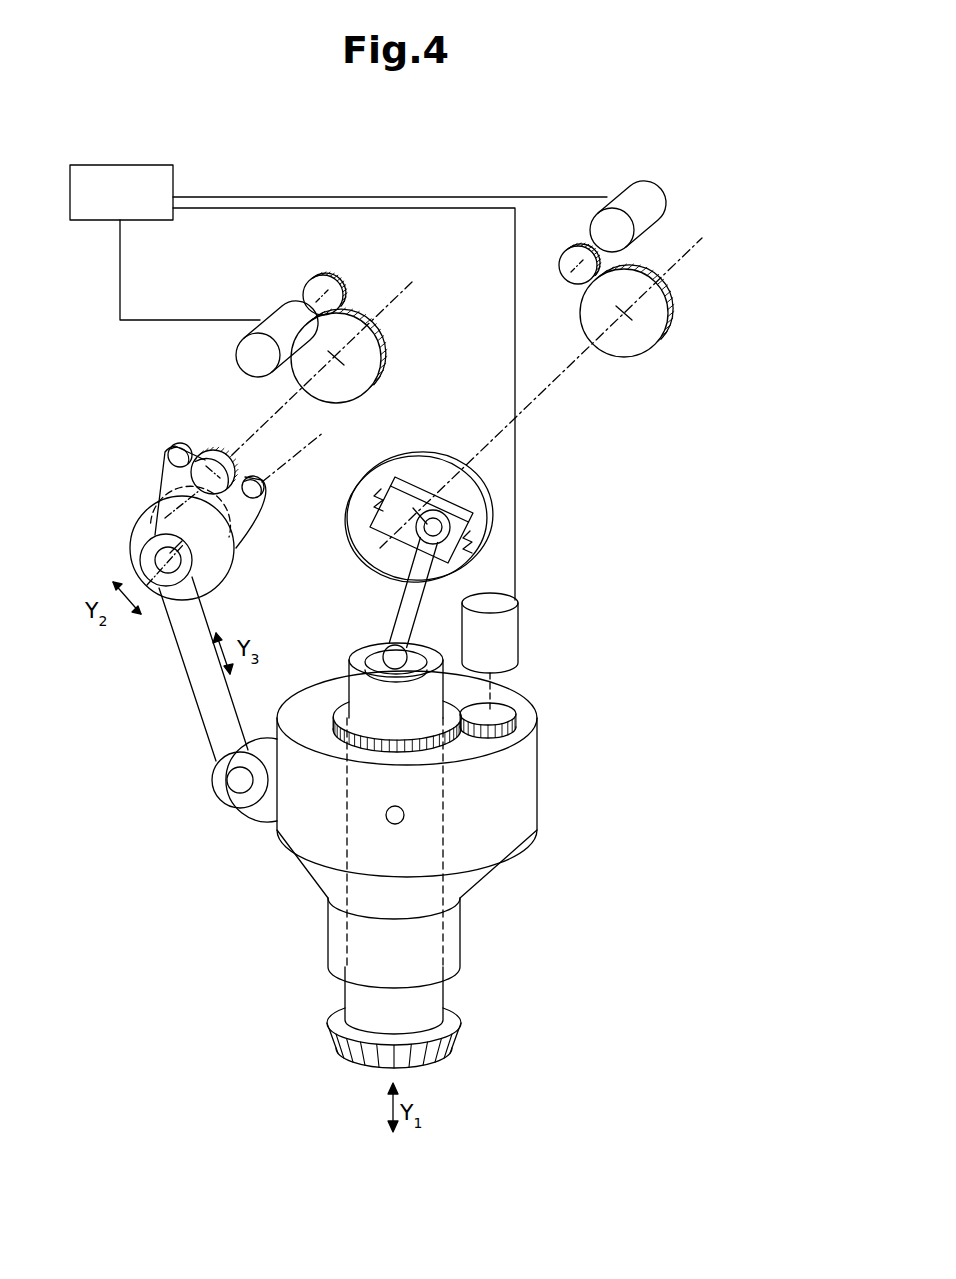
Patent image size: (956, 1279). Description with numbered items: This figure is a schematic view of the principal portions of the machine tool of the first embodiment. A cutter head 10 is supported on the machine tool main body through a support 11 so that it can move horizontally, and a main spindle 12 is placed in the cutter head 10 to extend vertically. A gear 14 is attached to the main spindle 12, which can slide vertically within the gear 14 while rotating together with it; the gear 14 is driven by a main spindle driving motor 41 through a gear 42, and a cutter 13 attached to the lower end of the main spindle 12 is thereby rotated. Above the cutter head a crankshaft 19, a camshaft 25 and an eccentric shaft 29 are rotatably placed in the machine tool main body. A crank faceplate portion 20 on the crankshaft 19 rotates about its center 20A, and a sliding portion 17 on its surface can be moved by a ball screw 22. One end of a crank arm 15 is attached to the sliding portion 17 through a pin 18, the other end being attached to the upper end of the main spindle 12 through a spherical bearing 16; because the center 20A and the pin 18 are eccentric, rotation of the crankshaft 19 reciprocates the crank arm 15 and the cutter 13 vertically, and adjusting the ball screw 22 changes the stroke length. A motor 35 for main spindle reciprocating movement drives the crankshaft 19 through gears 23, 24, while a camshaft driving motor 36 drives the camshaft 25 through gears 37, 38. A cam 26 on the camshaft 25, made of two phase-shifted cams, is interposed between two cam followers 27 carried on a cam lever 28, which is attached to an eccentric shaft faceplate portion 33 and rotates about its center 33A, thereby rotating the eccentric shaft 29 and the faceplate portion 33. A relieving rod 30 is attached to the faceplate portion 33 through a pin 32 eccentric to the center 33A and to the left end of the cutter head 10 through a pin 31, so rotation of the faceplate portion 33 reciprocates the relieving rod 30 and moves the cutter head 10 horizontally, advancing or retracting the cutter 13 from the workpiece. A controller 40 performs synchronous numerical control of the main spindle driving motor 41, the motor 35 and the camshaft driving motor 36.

The cutter head 10 is at (492, 800).
The support 11 is at (398, 823).
The main spindle 12 is at (425, 1007).
The cutter 13 is at (455, 1048).
The gear 14 is at (450, 705).
The crank arm 15 is at (398, 603).
The spherical bearing 16 is at (373, 652).
The sliding portion 17 is at (470, 515).
The pin 18 is at (445, 560).
The crankshaft 19 is at (550, 387).
The crank faceplate portion 20 is at (458, 490).
The center of the crank faceplate portion 20A is at (408, 517).
The ball screw 22 is at (470, 540).
The gear 23 is at (672, 322).
The gear 24 is at (572, 273).
The camshaft 25 is at (240, 425).
The cam 26 is at (200, 450).
The cam followers 27 is at (165, 455).
The cam lever 28 is at (150, 500).
The eccentric shaft 29 is at (300, 472).
The relieving rod 30 is at (205, 690).
The pin 31 is at (222, 792).
The pin 32 is at (163, 585).
The eccentric shaft faceplate portion 33 is at (140, 555).
The center of the eccentric shaft faceplate portion 33A is at (225, 575).
The motor for main spindle reciprocating movement 35 is at (643, 195).
The camshaft driving motor 36 is at (270, 320).
The gear 37 is at (330, 277).
The gear 38 is at (386, 353).
The controller 40 is at (130, 172).
The main spindle driving motor 41 is at (512, 626).
The gear 42 is at (520, 708).